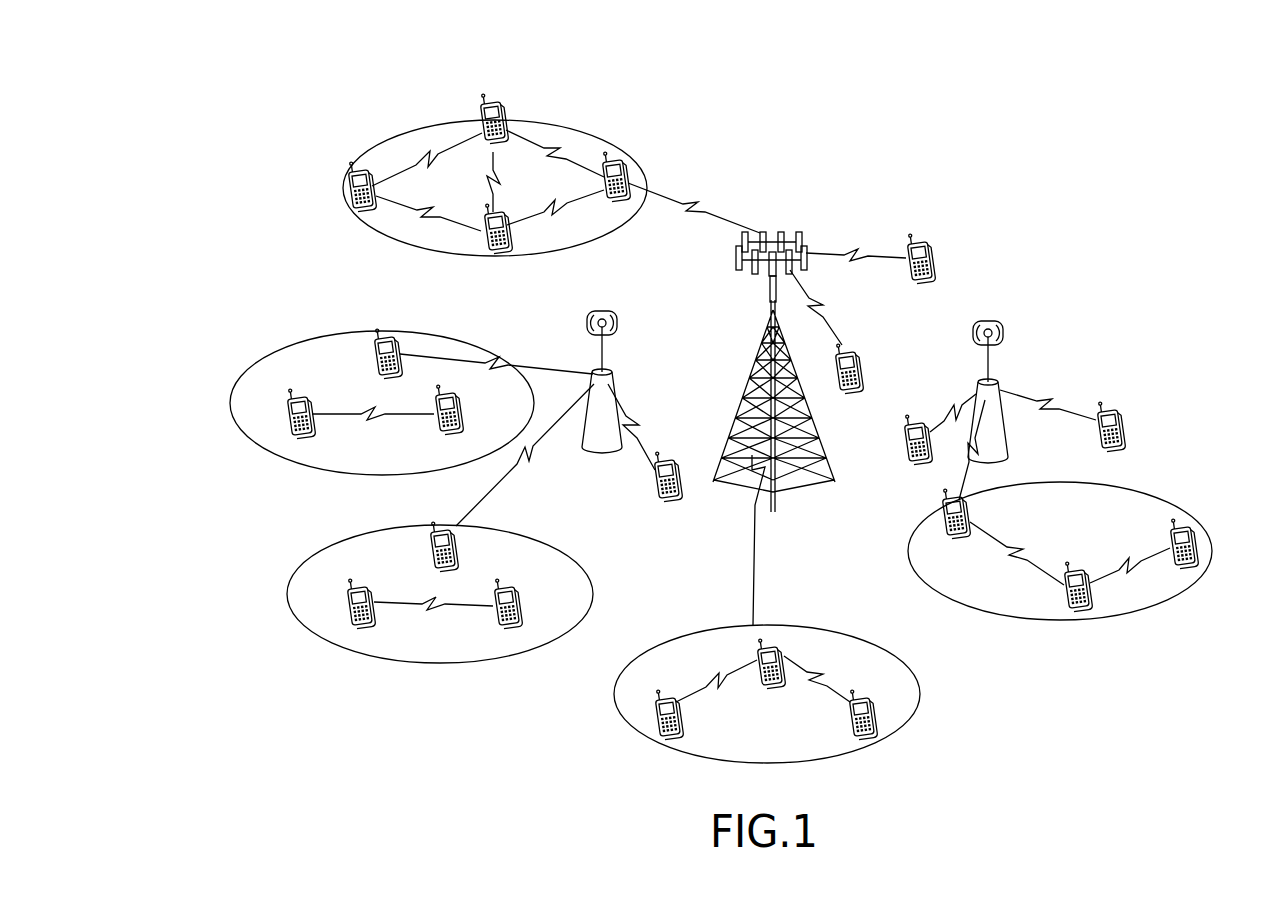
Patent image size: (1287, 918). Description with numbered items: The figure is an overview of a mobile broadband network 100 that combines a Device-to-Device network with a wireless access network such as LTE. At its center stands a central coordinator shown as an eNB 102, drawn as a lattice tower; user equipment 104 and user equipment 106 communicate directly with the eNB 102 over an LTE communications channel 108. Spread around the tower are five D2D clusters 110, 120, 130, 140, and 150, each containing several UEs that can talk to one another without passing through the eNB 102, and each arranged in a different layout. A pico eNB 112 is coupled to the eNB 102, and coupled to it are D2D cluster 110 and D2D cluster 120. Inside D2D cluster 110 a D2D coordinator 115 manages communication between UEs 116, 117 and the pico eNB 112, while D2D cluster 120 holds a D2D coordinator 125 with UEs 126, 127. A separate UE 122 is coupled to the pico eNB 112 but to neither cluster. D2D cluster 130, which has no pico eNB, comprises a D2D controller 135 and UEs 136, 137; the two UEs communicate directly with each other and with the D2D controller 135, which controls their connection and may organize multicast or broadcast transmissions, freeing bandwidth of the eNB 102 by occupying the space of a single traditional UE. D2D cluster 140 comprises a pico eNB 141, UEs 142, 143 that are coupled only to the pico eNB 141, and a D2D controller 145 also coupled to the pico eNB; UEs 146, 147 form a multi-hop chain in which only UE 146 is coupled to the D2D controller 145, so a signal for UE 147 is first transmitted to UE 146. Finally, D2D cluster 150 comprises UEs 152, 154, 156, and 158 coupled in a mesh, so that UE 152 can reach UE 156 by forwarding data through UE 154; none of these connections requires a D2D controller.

The mobile broadband network 100 is at (990, 138).
The eNB 102 is at (794, 232).
The user equipment 104 is at (918, 246).
The user equipment 106 is at (858, 358).
The LTE communications channel 108 is at (852, 250).
The D2D cluster 110 is at (230, 403).
The pico eNB 112 is at (620, 314).
The D2D coordinator 115 is at (393, 340).
The user equipment 116 is at (305, 398).
The user equipment 117 is at (460, 414).
The D2D cluster 120 is at (300, 622).
The user equipment 122 is at (674, 502).
The D2D coordinator 125 is at (432, 550).
The user equipment 126 is at (372, 626).
The user equipment 127 is at (518, 606).
The D2D cluster 130 is at (858, 749).
The D2D controller 135 is at (756, 682).
The user equipment 136 is at (680, 736).
The user equipment 137 is at (875, 716).
The D2D cluster 140 is at (1195, 584).
The pico eNB 141 is at (1010, 322).
The user equipment 142 is at (903, 463).
The user equipment 143 is at (1122, 422).
The D2D controller 145 is at (970, 516).
The user equipment 146 is at (1075, 620).
The user equipment 147 is at (1195, 544).
The D2D cluster 150 is at (367, 152).
The user equipment 152 is at (628, 165).
The user equipment 154 is at (502, 110).
The user equipment 156 is at (348, 189).
The user equipment 158 is at (512, 256).